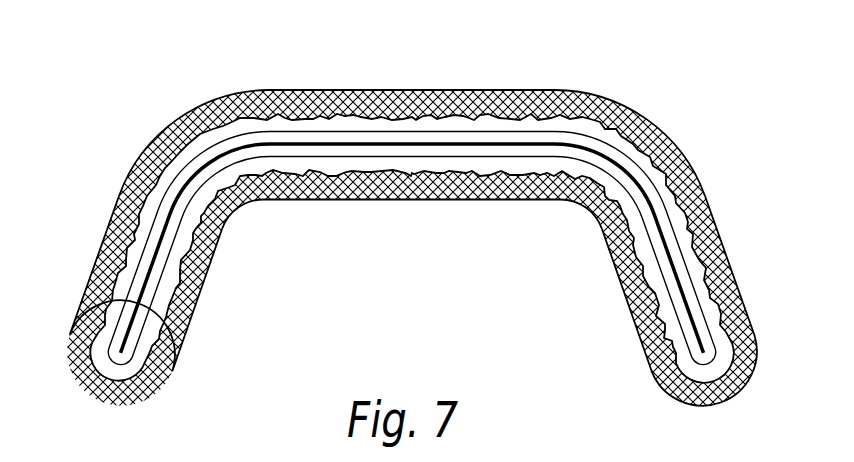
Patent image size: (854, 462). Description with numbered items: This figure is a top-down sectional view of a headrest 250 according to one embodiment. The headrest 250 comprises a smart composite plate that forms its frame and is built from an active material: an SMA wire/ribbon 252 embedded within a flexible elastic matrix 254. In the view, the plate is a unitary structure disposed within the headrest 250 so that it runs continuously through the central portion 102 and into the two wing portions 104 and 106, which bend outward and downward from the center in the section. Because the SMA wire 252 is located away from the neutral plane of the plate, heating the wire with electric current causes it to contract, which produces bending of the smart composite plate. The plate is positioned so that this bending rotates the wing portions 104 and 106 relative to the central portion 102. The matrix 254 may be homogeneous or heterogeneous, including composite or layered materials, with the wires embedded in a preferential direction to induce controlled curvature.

The headrest 250 is at (667, 72).
The central portion 102 is at (380, 90).
The wing portion 104 is at (728, 262).
The wing portion 106 is at (105, 235).
The SMA wire/ribbon 252 is at (462, 147).
The flexible elastic matrix 254 is at (423, 133).